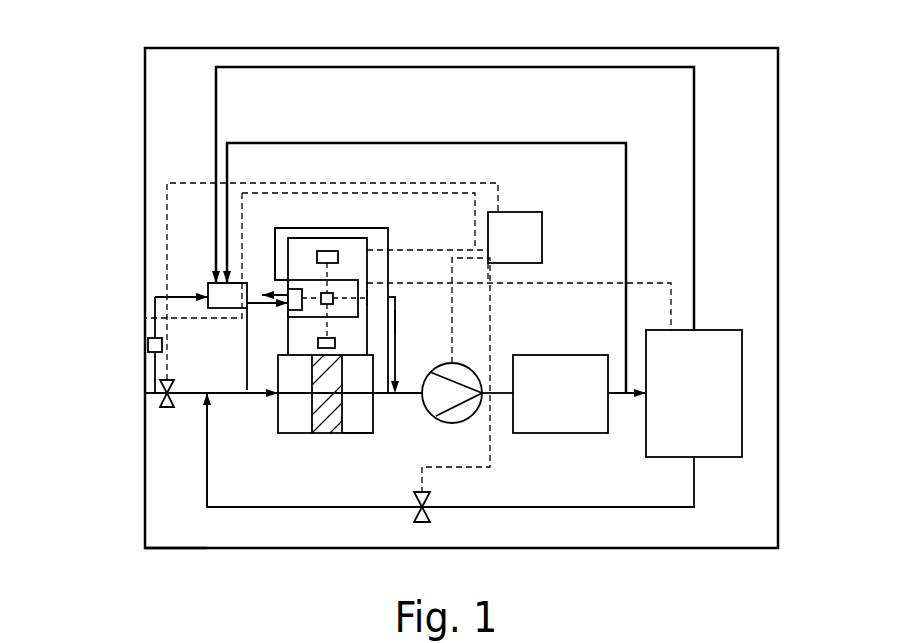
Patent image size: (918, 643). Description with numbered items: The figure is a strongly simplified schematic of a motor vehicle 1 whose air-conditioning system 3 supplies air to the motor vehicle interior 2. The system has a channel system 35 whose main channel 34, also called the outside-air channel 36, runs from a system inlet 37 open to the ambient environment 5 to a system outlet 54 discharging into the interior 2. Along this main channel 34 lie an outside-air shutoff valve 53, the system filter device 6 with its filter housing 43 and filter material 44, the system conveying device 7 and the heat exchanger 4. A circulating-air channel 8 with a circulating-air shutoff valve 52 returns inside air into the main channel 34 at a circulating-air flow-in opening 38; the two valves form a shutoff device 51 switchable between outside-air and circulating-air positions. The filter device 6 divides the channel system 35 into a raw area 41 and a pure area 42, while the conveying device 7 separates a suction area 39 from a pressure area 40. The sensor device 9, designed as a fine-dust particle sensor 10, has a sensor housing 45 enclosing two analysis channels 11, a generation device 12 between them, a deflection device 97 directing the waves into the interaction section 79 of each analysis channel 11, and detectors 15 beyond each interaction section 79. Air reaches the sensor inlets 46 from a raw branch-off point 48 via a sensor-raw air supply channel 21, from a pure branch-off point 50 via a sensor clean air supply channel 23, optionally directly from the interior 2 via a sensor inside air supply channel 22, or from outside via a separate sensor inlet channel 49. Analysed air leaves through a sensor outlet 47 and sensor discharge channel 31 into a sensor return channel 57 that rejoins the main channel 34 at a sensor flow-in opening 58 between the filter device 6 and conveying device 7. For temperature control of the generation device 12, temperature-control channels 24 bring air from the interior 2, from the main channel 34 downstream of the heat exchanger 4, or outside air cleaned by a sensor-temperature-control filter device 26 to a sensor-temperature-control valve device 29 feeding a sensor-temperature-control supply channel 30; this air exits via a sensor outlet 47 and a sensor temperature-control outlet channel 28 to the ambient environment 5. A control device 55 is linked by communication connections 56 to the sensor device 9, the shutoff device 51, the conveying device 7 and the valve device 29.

The motor vehicle 1 is at (203, 46).
The motor vehicle interior 2 is at (686, 405).
The air-conditioning system 3 is at (720, 117).
The heat exchanger 4 is at (552, 405).
The ambient environment 5 is at (112, 212).
The system filter device 6 is at (283, 440).
The system conveying device 7 is at (460, 442).
The circulating-air channel 8 is at (590, 508).
The sensor device 9 is at (348, 245).
The fine-dust particle sensor 10 is at (360, 216).
The analysis channel 11 is at (384, 228).
The generation device 12 is at (275, 228).
The detector 15 is at (328, 250).
The sensor-raw air supply channel 21 is at (247, 390).
The sensor inside air supply channel 22 is at (650, 283).
The sensor clean air supply channel 23 is at (445, 362).
The temperature-control channel 24 is at (593, 142).
The sensor-temperature-control filter device 26 is at (90, 379).
The sensor temperature-control outlet channel 28 is at (212, 283).
The sensor-temperature-control valve device 29 is at (208, 285).
The sensor-temperature-control supply channel 30 is at (288, 305).
The sensor discharge channel 31 is at (396, 322).
The main channel 34 is at (132, 445).
The channel system 35 is at (194, 458).
The outside-air channel 36 is at (172, 420).
The system inlet 37 is at (155, 407).
The circulating-air flow-in opening 38 is at (205, 390).
The suction area 39 is at (232, 508).
The pressure area 40 is at (510, 482).
The raw area 41 is at (182, 519).
The pure area 42 is at (358, 477).
The filter housing 43 is at (363, 437).
The filter material 44 is at (323, 440).
The sensor housing 45 is at (390, 250).
The sensor inlet 46 is at (287, 290).
The sensor outlet 47 is at (367, 297).
The raw branch-off point 48 is at (245, 393).
The sensor inlet channel 49 is at (147, 347).
The pure branch-off point 50 is at (397, 400).
The shutoff device 51 is at (452, 522).
The circulating-air shutoff valve 52 is at (413, 517).
The outside-air shutoff valve 53 is at (165, 412).
The system outlet 54 is at (640, 398).
The control device 55 is at (503, 249).
The communication connections 56 is at (475, 230).
The sensor return channel 57 is at (398, 298).
The sensor flow-in opening 58 is at (402, 398).
The interaction section 79 is at (315, 250).
The deflection device 97 is at (292, 288).